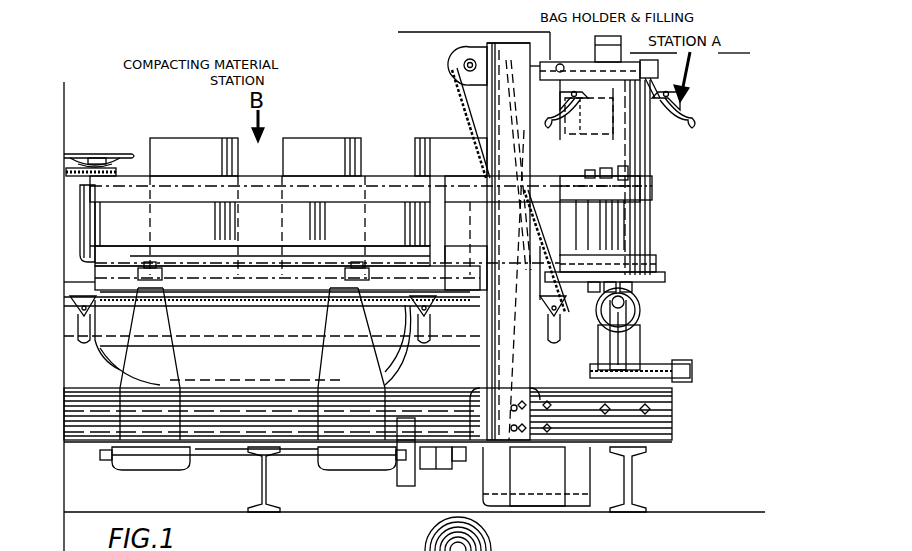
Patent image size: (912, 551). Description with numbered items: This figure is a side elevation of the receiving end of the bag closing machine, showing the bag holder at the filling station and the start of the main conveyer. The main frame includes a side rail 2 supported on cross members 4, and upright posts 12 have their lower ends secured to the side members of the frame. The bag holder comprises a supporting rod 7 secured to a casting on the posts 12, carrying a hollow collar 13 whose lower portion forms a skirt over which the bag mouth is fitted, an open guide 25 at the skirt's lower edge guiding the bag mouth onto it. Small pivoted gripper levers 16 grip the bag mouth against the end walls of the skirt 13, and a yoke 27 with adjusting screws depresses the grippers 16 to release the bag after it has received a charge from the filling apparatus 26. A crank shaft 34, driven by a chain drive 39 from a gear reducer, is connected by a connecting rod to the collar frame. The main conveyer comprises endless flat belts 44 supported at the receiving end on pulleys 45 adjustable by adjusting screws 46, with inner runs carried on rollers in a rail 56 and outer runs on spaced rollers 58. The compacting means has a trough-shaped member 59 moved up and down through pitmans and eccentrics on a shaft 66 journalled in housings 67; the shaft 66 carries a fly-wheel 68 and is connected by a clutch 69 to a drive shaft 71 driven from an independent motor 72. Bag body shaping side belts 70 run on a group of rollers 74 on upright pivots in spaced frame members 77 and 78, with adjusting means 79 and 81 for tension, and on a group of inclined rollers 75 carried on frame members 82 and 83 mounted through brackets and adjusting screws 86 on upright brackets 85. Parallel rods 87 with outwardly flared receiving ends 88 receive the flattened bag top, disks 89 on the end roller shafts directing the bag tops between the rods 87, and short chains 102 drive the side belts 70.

The side rail 2 is at (228, 412).
The cross member 4 is at (262, 492).
The supporting rod 7 is at (540, 62).
The upright post 12 is at (507, 52).
The collar 13 is at (410, 18).
The gripper lever 16 is at (566, 118).
The open guide 25 is at (650, 136).
The filling apparatus 26 is at (595, 40).
The yoke 27 is at (668, 65).
The crank shaft 34 is at (463, 67).
The chain drive 39 is at (470, 95).
The endless flat belt 44 is at (258, 290).
The pulley 45 is at (642, 311).
The adjusting screw 46 is at (665, 368).
The rail 56 is at (70, 274).
The roller 58 is at (76, 327).
The trough-shaped member 59 is at (215, 290).
The shaft 66 is at (290, 458).
The housing 67 is at (146, 470).
The fly-wheel 68 is at (403, 480).
The clutch 69 is at (436, 468).
The side belt 70 is at (380, 220).
The drive shaft 71 is at (460, 460).
The independent motor 72 is at (549, 482).
The roller 74 is at (636, 218).
The roller 75 is at (82, 218).
The frame member 77 is at (622, 193).
The frame member 78 is at (622, 256).
The adjusting means 79 is at (638, 172).
The adjusting means 81 is at (660, 280).
The frame member 82 is at (253, 190).
The frame member 83 is at (318, 252).
The upright bracket 85 is at (166, 368).
The adjusting screw 86 is at (152, 272).
The rod 87 is at (70, 152).
The flared receiving end 88 is at (128, 152).
The disk 89 is at (95, 158).
The short chain 102 is at (70, 176).